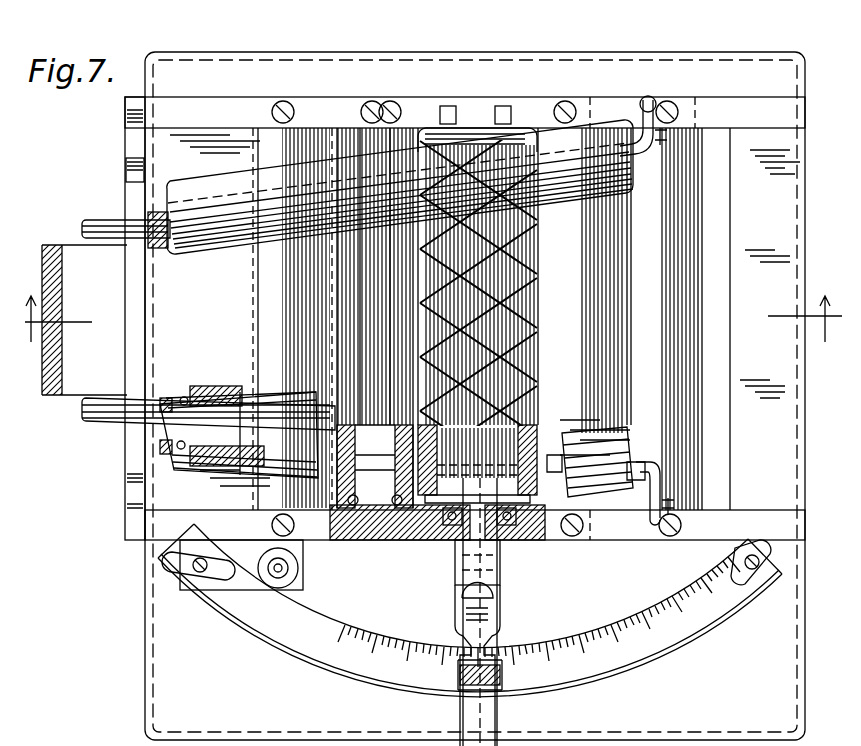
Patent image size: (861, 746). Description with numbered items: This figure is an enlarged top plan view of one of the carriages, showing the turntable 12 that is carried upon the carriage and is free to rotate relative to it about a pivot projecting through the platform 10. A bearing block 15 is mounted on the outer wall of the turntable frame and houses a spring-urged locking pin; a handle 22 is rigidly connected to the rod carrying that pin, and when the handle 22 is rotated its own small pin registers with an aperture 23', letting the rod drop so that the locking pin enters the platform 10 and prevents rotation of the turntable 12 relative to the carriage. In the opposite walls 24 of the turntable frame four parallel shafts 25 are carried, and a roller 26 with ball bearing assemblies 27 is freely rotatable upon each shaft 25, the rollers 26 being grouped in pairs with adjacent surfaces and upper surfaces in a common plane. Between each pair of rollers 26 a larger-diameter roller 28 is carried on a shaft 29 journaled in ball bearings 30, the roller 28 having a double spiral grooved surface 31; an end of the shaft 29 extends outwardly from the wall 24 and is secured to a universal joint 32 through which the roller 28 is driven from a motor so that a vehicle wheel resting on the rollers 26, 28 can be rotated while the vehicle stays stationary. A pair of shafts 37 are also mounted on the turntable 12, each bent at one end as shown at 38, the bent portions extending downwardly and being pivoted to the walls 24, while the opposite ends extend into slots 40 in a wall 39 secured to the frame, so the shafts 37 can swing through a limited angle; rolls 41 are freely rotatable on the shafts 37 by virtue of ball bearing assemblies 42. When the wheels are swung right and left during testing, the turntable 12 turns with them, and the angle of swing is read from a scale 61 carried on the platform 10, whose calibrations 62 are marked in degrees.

The platform 10 is at (430, 331).
The turntable 12 is at (576, 91).
The bearing block 15 is at (307, 581).
The handle 22 is at (178, 580).
The aperture 23' is at (489, 598).
The walls 24 is at (683, 142).
The shafts 25 is at (370, 527).
The roller 26 is at (323, 540).
The ball bearing assemblies 27 is at (410, 530).
The roller 28 is at (424, 135).
The shaft 29 is at (500, 538).
The ball bearings 30 is at (440, 538).
The double spiral grooved surface 31 is at (542, 343).
The universal joint 32 is at (502, 600).
The shafts 37 is at (156, 245).
The bent portion 38 is at (655, 158).
The wall 39 is at (128, 200).
The slots 40 is at (128, 175).
The rolls 41 is at (352, 232).
The ball bearing assemblies 42 is at (190, 393).
The scale 61 is at (572, 633).
The calibrations 62 is at (632, 612).